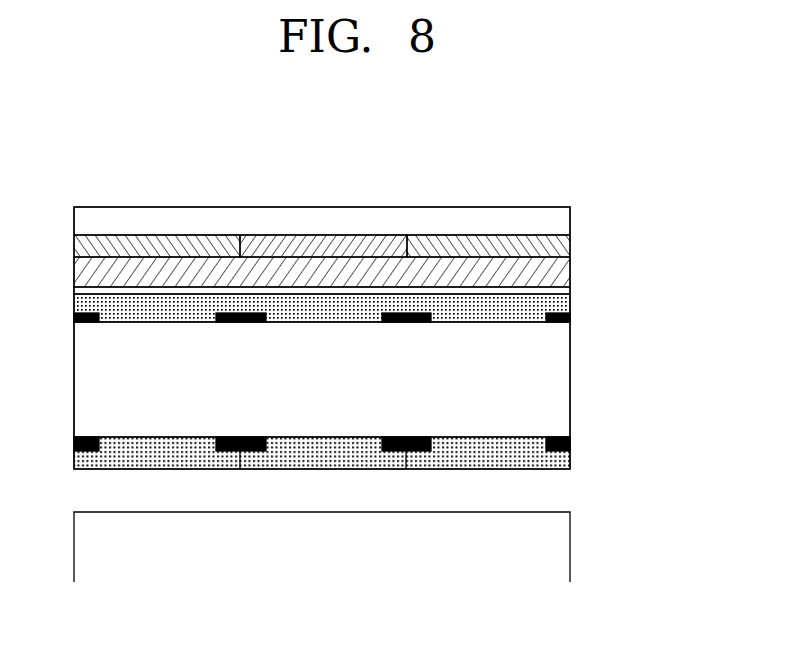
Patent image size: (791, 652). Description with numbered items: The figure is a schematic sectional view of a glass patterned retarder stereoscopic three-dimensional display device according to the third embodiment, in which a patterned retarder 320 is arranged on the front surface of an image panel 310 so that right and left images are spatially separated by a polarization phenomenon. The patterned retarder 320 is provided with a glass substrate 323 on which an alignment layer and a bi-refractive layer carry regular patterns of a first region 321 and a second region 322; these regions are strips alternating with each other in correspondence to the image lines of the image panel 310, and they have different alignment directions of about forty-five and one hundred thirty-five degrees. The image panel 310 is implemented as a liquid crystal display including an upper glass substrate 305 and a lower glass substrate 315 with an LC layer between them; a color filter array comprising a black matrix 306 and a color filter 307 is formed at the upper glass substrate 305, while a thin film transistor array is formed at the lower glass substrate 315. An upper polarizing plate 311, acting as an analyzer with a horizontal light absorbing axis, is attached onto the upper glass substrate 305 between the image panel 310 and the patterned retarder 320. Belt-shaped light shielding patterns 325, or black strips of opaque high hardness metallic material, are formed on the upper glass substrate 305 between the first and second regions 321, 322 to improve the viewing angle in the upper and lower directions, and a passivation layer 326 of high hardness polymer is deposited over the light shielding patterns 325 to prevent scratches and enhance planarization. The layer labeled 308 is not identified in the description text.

The patterned retarder 320 is at (323, 146).
The first region 321 is at (481, 245).
The second region 322 is at (338, 245).
The glass substrate 323 is at (409, 218).
The upper polarizing plate 311 is at (566, 264).
The common electrode 308 is at (565, 288).
The passivation layer 326 is at (565, 300).
The light shielding patterns 325 is at (566, 318).
The upper glass substrate 305 is at (564, 381).
The black matrix 306 is at (570, 442).
The color filter 307 is at (570, 458).
The image panel 310 is at (657, 373).
The lower glass substrate 315 is at (564, 540).